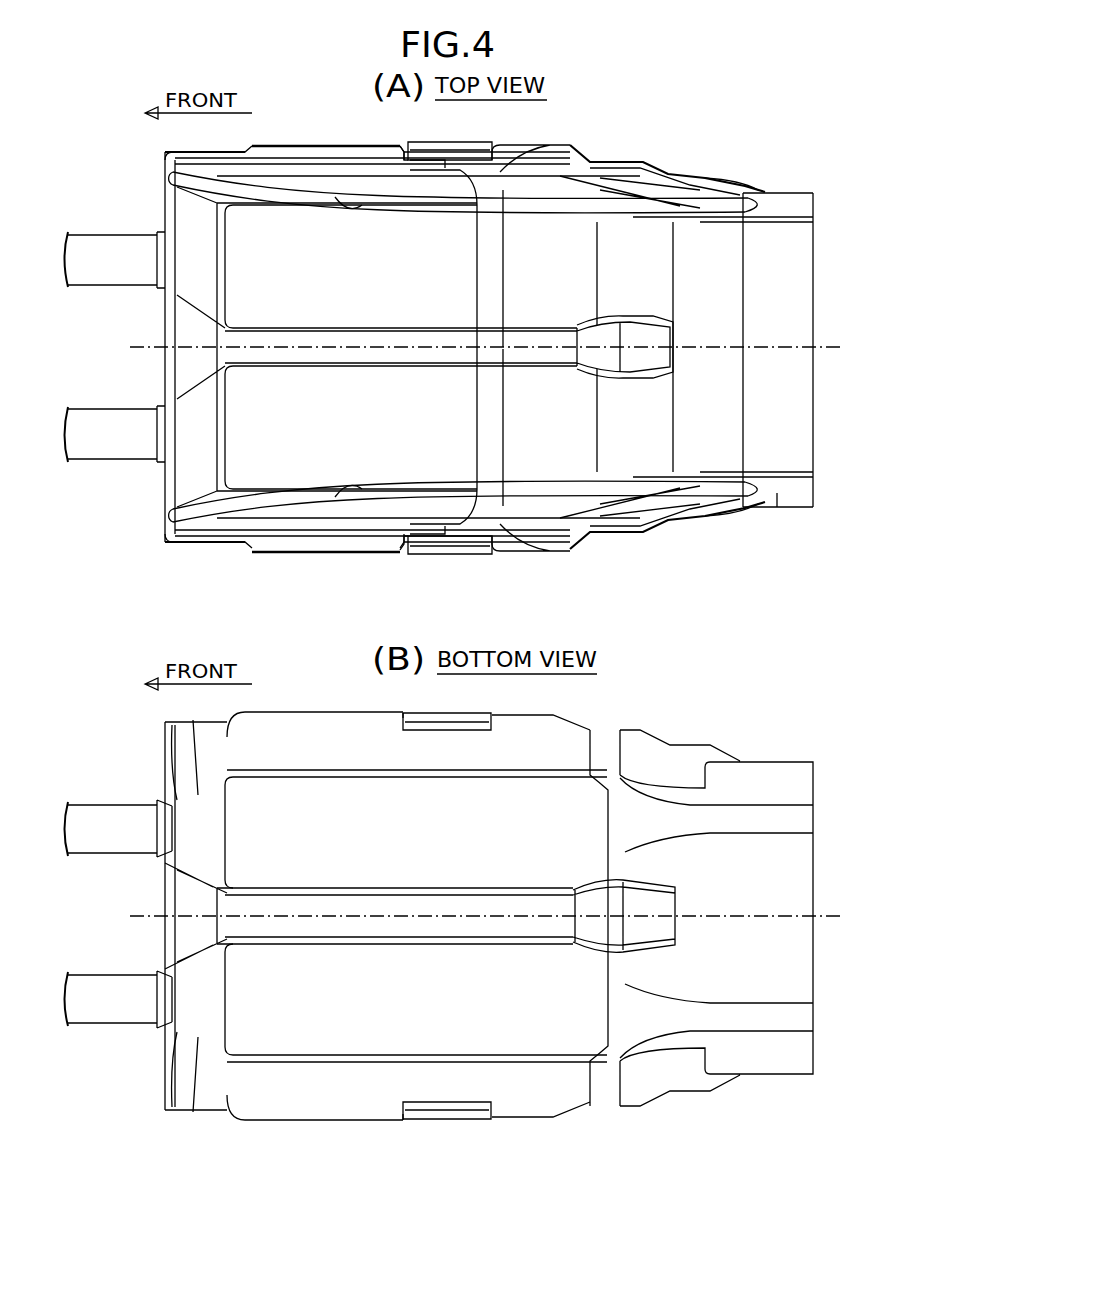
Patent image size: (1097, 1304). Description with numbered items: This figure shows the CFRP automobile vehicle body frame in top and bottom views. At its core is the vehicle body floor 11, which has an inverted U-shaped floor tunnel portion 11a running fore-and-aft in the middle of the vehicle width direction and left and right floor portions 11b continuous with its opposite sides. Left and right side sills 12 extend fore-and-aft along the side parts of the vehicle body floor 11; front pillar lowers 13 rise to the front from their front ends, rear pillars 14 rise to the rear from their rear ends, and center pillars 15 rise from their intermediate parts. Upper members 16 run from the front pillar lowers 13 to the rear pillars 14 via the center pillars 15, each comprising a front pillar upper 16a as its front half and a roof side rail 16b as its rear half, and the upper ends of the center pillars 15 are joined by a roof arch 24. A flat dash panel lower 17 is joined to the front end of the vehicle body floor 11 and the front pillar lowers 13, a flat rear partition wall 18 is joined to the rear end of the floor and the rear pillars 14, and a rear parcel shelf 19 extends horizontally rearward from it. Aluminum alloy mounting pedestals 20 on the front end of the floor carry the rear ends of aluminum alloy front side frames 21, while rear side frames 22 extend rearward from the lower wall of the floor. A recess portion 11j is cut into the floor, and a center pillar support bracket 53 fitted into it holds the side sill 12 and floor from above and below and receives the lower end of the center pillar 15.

The vehicle body floor 11 is at (327, 478).
The floor tunnel portion 11a is at (430, 330).
The floor portion 11b is at (298, 284).
The recess portion 11j is at (405, 147).
The side sill 12 is at (330, 150).
The front pillar lower 13 is at (210, 150).
The rear pillar 14 is at (645, 185).
The center pillar 15 is at (525, 178).
The upper member 16 is at (415, 218).
The front pillar upper 16a is at (348, 210).
The roof side rail 16b is at (605, 220).
The dash panel lower 17 is at (165, 330).
The rear partition wall 18 is at (730, 312).
The rear parcel shelf 19 is at (805, 300).
The mounting pedestal 20 is at (162, 233).
The front side frame 21 is at (123, 240).
The rear side frame 22 is at (745, 823).
The roof arch 24 is at (505, 265).
The center pillar support bracket 53 is at (440, 150).